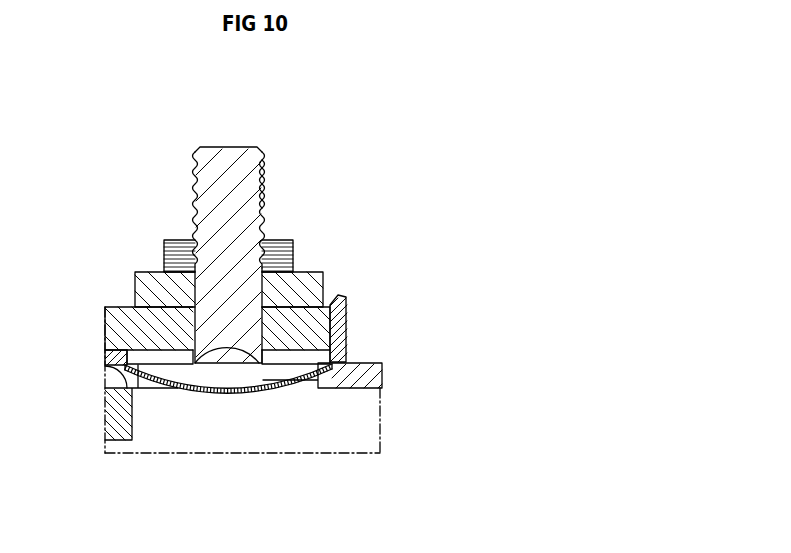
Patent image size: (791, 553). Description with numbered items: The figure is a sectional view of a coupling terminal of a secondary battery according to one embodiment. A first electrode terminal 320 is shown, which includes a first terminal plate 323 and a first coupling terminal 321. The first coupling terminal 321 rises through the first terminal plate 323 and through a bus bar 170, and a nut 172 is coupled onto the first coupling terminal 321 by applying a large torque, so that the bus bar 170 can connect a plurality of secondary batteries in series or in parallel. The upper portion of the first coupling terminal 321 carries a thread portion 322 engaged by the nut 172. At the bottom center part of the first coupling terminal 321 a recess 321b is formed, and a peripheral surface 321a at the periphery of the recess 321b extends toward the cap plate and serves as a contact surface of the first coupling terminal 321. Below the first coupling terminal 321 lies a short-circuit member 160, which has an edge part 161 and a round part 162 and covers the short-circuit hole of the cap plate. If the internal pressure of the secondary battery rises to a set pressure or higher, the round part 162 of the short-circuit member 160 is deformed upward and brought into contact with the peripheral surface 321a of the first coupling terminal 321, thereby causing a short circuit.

The first electrode terminal 320 is at (236, 133).
The first coupling terminal 321 is at (213, 148).
The thread portion 322 is at (263, 214).
The first terminal plate 323 is at (119, 307).
The peripheral surface 321a is at (320, 380).
The recess 321b is at (242, 362).
The bus bar 170 is at (151, 275).
The nut 172 is at (293, 250).
The short-circuit member 160 is at (236, 397).
The edge part 161 is at (106, 390).
The round part 162 is at (212, 393).